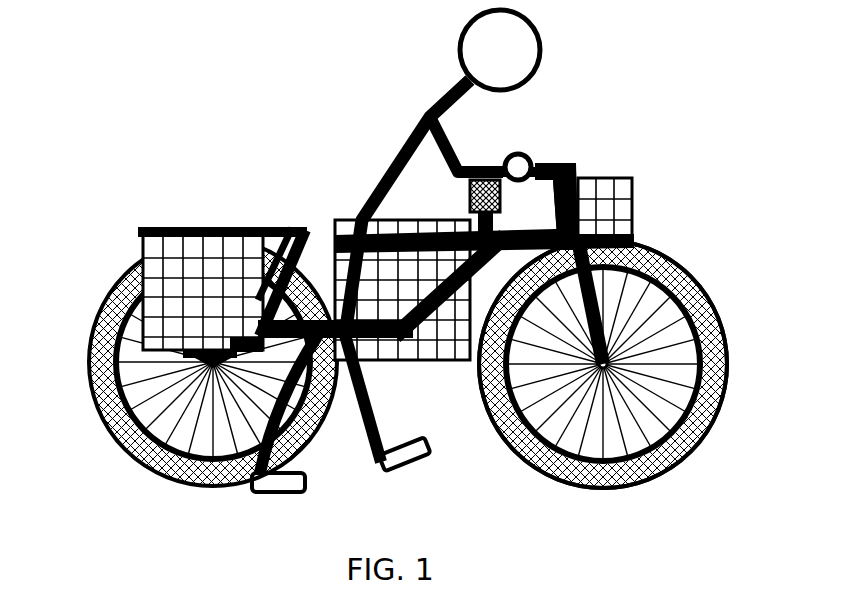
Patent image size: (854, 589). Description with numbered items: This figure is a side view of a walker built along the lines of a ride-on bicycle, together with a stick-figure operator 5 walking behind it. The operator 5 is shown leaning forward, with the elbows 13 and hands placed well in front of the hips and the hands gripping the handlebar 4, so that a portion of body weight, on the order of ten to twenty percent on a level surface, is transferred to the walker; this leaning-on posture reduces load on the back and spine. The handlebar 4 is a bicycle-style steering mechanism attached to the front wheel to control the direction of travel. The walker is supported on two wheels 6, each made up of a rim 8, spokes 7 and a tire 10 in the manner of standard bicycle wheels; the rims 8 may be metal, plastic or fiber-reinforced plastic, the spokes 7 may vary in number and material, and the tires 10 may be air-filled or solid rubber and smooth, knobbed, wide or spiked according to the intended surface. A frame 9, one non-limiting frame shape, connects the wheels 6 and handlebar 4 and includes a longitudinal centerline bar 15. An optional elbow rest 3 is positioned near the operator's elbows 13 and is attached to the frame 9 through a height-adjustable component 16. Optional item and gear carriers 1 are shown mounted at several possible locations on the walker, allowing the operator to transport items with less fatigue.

The item and gear carriers 1 is at (140, 245).
The elbow rest 3 is at (470, 193).
The handlebar 4 is at (555, 172).
The operator 5 is at (480, 58).
The wheels 6 is at (100, 322).
The spokes 7 is at (652, 313).
The rims 8 is at (707, 368).
The frame 9 is at (418, 360).
The tires 10 is at (660, 462).
The elbows 13 is at (460, 165).
The longitudinal centerline bar 15 is at (393, 233).
The height-adjustable component 16 is at (498, 228).